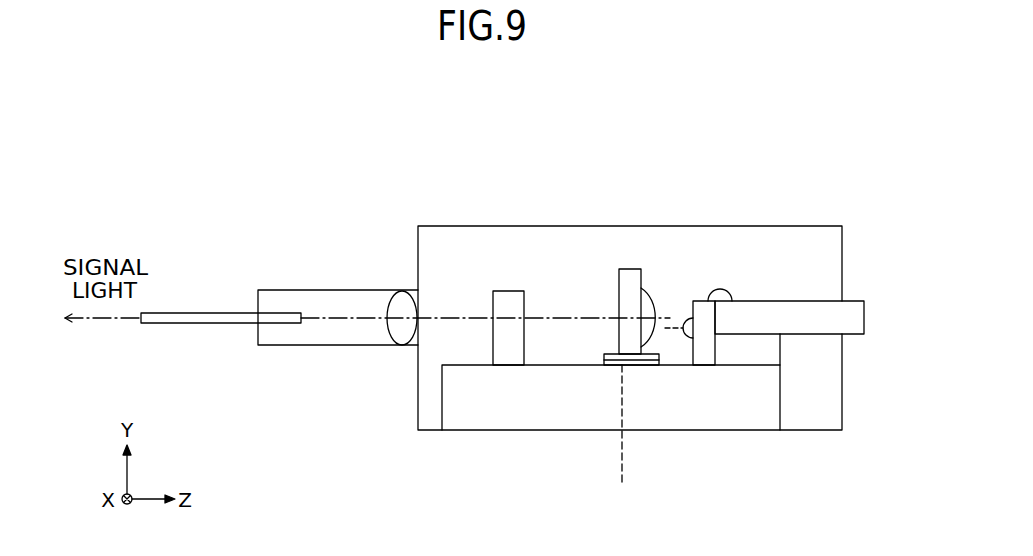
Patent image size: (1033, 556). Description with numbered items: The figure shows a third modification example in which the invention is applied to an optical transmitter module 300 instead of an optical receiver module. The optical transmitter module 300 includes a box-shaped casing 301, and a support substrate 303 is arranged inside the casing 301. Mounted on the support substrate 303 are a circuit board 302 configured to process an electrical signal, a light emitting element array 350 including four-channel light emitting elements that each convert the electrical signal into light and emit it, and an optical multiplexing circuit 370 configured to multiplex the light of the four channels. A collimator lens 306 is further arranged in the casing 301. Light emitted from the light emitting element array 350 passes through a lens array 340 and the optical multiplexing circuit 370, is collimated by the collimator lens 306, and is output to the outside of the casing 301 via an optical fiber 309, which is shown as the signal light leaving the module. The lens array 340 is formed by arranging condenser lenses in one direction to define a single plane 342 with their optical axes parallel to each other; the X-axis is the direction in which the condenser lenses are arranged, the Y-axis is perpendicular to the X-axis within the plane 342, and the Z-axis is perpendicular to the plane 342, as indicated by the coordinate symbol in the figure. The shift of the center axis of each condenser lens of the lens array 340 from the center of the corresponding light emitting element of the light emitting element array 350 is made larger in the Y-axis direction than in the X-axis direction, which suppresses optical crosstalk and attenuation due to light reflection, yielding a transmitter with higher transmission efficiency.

The optical transmitter module 300 is at (643, 127).
The box-shaped casing 301 is at (843, 243).
The circuit board 302 is at (858, 307).
The support substrate 303 is at (733, 419).
The collimator lens 306 is at (390, 292).
The optical fiber 309 is at (222, 310).
The lens array 340 is at (630, 274).
The plane 342 is at (620, 473).
The light emitting element array 350 is at (702, 305).
The optical multiplexing circuit 370 is at (506, 295).